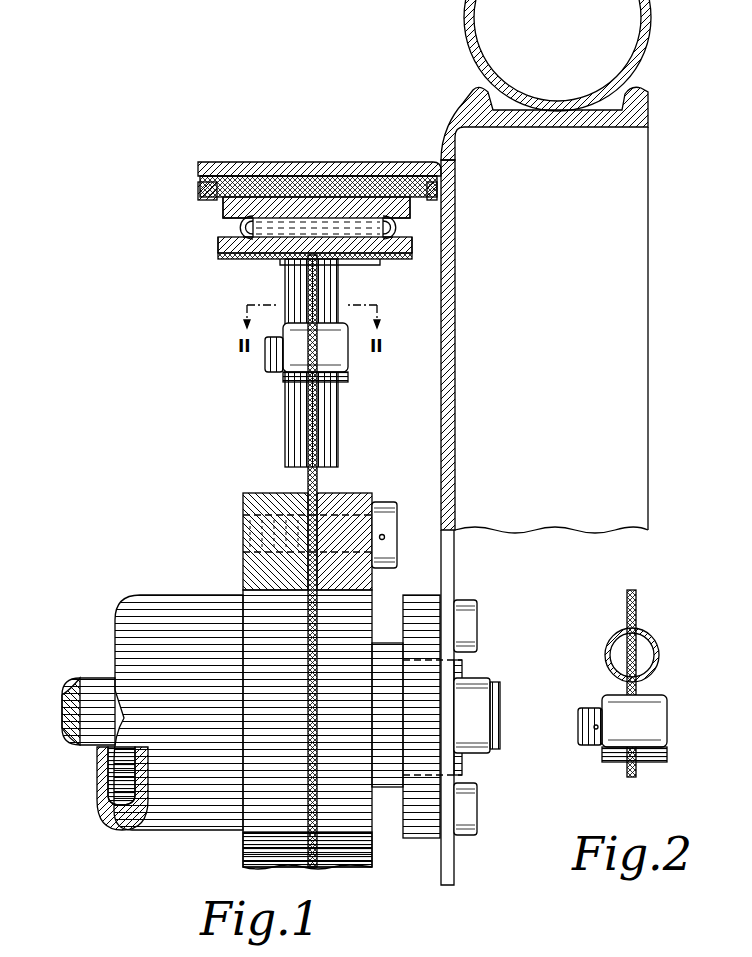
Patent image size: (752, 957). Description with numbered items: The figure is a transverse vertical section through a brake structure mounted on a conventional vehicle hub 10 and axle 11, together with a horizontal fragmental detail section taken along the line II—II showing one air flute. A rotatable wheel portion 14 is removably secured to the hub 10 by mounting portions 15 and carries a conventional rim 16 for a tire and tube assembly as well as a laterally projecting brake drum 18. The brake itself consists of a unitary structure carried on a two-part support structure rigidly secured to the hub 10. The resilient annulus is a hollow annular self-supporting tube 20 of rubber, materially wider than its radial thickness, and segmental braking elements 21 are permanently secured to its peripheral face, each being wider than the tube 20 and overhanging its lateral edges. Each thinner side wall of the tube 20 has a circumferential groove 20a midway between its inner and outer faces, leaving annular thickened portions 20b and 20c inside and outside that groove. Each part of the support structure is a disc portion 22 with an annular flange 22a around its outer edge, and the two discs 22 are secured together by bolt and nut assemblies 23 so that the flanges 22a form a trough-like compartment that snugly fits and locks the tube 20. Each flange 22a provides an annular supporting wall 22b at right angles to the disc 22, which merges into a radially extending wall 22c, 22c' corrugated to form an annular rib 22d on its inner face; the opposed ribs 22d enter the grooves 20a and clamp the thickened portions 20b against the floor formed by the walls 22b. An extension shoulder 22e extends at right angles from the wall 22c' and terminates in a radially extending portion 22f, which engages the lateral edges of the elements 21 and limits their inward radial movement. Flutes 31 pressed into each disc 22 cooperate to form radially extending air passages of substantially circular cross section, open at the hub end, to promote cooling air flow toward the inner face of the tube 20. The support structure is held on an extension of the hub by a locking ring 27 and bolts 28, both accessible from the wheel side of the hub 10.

In FIG. 1, the vehicle hub 10 is at (117, 635).
In FIG. 1, the axle 11 is at (64, 697).
In FIG. 1, the rotatable wheel portion 14 is at (455, 470).
In FIG. 1, the mounting portions 15 is at (478, 625).
In FIG. 1, the rim 16 is at (548, 113).
In FIG. 1, the brake drum 18 is at (378, 163).
In FIG. 1, the hollow annular self-supporting tube 20 is at (318, 228).
In FIG. 1, the circumferential groove 20a is at (250, 230).
In FIG. 1, the annular thickened portion 20b is at (222, 256).
In FIG. 1, the annular thickened portion 20c is at (246, 190).
In FIG. 1, the segmental braking elements 21 is at (318, 186).
In FIG. 1, the disc portion 22 is at (307, 483).
In FIG. 2, the disc portion 22 is at (647, 605).
In FIG. 1, the annular flange 22a is at (240, 252).
In FIG. 1, the annular supporting wall 22b is at (283, 263).
In FIG. 1, the radially extending wall 22c is at (320, 260).
In FIG. 1, the radially extending wall portion 22c' is at (321, 229).
In FIG. 1, the annular rib 22d is at (220, 240).
In FIG. 1, the extension shoulder 22e is at (223, 208).
In FIG. 1, the radially extending portion 22f is at (200, 190).
In FIG. 1, the bolt and nut assemblies 23 is at (266, 360).
In FIG. 2, the bolt and nut assemblies 23 is at (668, 715).
In FIG. 1, the locking ring 27 is at (360, 493).
In FIG. 1, the bolts 28 is at (398, 520).
In FIG. 1, the flutes 31 is at (290, 405).
In FIG. 2, the flutes 31 is at (607, 650).